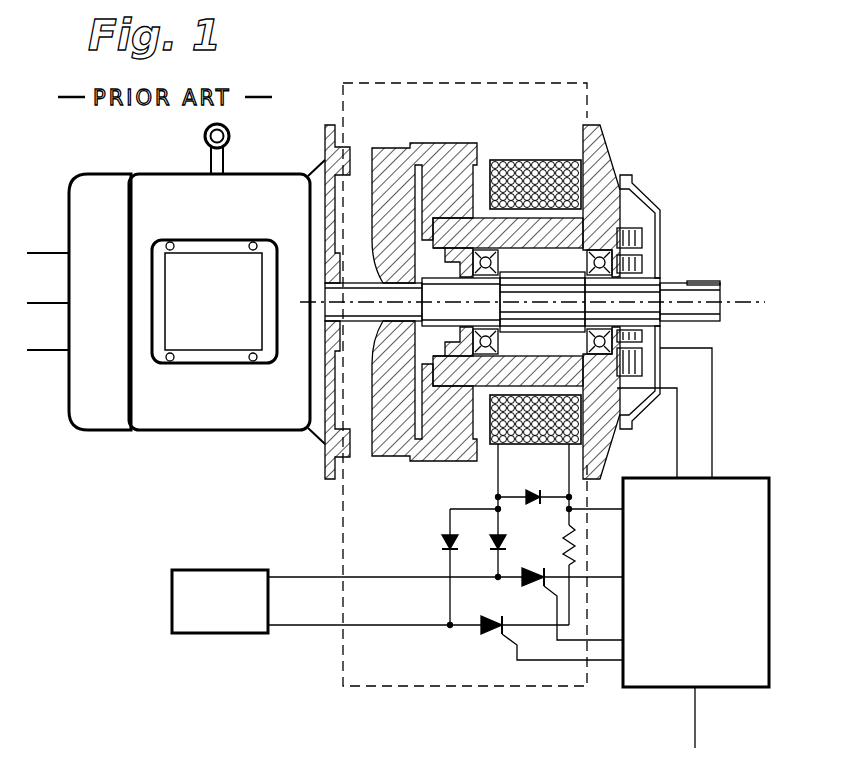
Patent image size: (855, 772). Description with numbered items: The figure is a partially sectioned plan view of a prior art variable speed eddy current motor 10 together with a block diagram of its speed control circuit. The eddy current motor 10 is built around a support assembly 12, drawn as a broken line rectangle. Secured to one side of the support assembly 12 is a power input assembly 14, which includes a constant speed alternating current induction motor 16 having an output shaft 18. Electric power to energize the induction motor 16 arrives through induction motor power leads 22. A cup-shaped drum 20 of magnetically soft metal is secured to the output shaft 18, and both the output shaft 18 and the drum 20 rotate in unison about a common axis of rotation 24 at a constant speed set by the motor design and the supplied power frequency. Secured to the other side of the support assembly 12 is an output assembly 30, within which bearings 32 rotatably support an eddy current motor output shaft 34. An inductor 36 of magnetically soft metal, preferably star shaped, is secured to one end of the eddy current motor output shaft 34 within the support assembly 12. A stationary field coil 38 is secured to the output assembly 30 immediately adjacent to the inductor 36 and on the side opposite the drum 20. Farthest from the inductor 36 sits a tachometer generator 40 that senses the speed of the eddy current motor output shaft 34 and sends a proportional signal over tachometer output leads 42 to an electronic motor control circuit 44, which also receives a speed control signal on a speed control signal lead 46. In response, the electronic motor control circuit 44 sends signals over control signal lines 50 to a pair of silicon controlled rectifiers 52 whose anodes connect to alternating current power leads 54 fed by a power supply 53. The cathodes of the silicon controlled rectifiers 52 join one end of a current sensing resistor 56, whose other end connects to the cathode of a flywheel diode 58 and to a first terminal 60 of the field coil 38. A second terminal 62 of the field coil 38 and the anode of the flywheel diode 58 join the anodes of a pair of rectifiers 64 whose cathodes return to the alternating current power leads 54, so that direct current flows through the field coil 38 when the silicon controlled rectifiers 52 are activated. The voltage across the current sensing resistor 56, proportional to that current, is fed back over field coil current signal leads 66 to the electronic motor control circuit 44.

The eddy current motor 10 is at (158, 455).
The support assembly 12 is at (590, 78).
The power input assembly 14 is at (325, 137).
The induction motor 16 is at (152, 198).
The output shaft 18 is at (355, 283).
The drum 20 is at (412, 147).
The induction motor power leads 22 is at (44, 253).
The axis of rotation 24 is at (301, 301).
The output assembly 30 is at (614, 173).
The bearings 32 is at (585, 264).
The eddy current motor output shaft 34 is at (716, 291).
The inductor 36 is at (478, 167).
The field coil 38 is at (541, 160).
The tachometer generator 40 is at (644, 232).
The tachometer output leads 42 is at (712, 440).
The electronic motor control circuit 44 is at (734, 478).
The speed control signal lead 46 is at (696, 722).
The control signal lines 50 is at (557, 640).
The silicon controlled rectifiers 52 is at (531, 568).
The power supply 53 is at (172, 570).
The alternating current power leads 54 is at (306, 576).
The current sensing resistor 56 is at (576, 541).
The flywheel diode 58 is at (533, 490).
The first terminal 60 is at (604, 467).
The second terminal 62 is at (496, 462).
The rectifiers 64 is at (444, 529).
The field coil current signal leads 66 is at (591, 509).